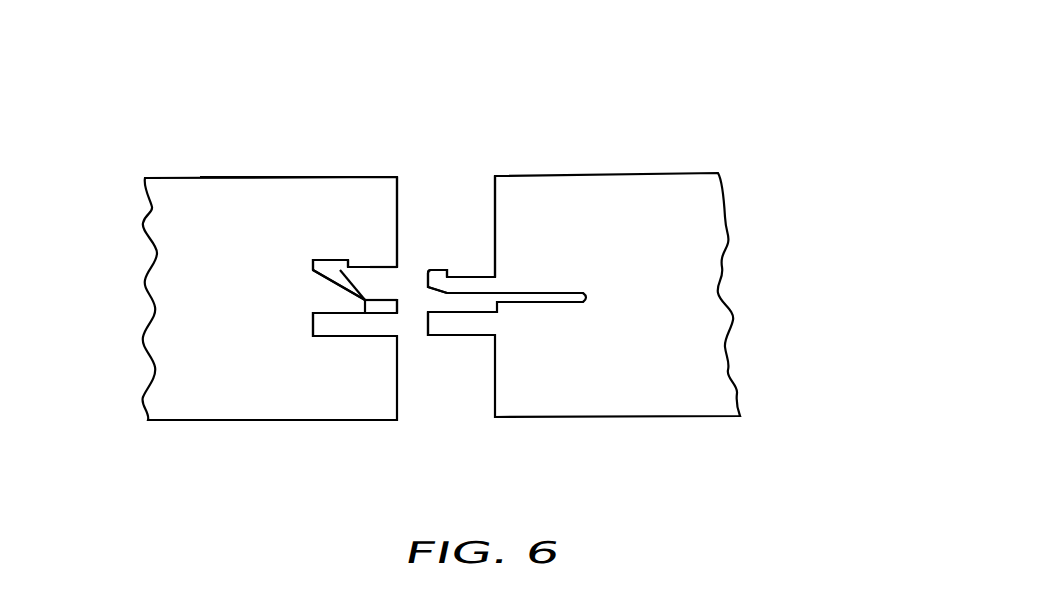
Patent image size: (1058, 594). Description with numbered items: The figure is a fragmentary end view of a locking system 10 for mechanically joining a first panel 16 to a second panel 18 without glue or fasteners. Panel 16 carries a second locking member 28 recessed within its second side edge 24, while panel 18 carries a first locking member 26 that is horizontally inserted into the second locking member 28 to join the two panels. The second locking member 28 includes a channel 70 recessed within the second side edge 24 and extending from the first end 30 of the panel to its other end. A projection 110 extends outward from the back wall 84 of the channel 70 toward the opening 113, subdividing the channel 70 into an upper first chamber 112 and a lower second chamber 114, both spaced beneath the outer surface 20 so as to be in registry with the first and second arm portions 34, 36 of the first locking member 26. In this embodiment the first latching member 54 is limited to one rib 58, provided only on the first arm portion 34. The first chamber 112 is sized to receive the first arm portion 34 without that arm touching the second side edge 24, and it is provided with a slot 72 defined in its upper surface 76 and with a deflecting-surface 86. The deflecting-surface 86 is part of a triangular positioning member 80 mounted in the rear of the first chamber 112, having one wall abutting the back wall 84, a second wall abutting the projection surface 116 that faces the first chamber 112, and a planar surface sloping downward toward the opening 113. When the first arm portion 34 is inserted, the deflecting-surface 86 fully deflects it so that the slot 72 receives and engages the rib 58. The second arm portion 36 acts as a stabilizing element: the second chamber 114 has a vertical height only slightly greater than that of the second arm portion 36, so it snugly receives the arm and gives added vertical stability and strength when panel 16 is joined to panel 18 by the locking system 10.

The locking system 10 is at (771, 85).
The first panel 16 is at (185, 197).
The second panel 18 is at (707, 227).
The outer surface 20 is at (287, 176).
The second side edge 24 is at (397, 208).
The first locking member 26 is at (493, 288).
The second locking member 28 is at (365, 277).
The first end 30 is at (227, 380).
The first arm portion 34 is at (470, 288).
The second arm portion 36 is at (465, 323).
The first latching member 54 is at (440, 283).
The first rib 58 is at (428, 270).
The channel 70 is at (382, 277).
The first slot 72 is at (313, 260).
The upper surface 76 is at (360, 277).
The positioning member 80 is at (350, 296).
The back wall 84 is at (310, 267).
The first deflecting-surface 86 is at (372, 284).
The projection 110 is at (365, 305).
The first chamber 112 is at (368, 284).
The opening 113 is at (391, 284).
The second chamber 114 is at (363, 322).
The projection surface 116 is at (380, 300).